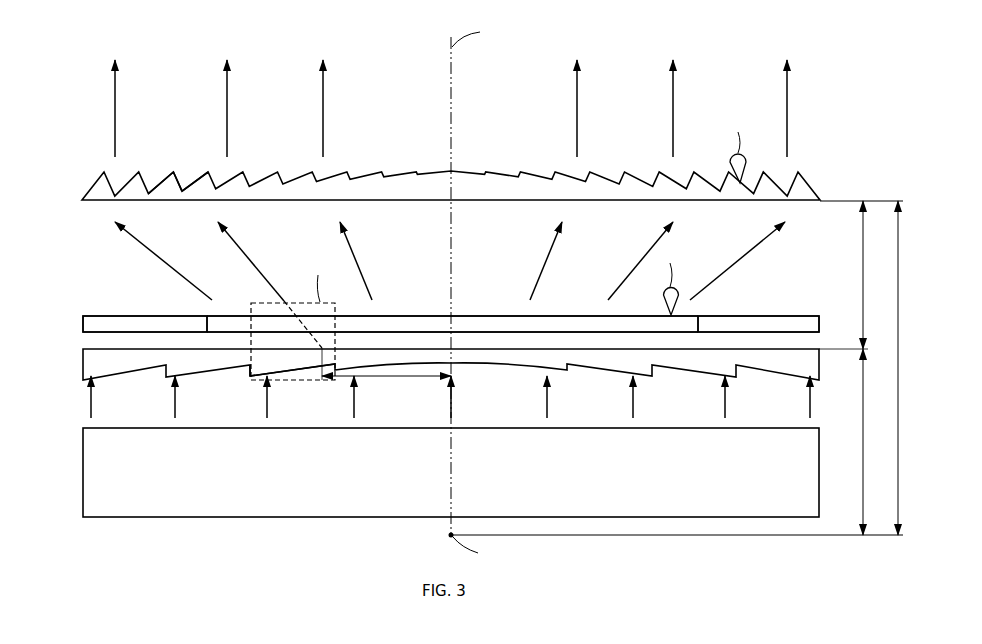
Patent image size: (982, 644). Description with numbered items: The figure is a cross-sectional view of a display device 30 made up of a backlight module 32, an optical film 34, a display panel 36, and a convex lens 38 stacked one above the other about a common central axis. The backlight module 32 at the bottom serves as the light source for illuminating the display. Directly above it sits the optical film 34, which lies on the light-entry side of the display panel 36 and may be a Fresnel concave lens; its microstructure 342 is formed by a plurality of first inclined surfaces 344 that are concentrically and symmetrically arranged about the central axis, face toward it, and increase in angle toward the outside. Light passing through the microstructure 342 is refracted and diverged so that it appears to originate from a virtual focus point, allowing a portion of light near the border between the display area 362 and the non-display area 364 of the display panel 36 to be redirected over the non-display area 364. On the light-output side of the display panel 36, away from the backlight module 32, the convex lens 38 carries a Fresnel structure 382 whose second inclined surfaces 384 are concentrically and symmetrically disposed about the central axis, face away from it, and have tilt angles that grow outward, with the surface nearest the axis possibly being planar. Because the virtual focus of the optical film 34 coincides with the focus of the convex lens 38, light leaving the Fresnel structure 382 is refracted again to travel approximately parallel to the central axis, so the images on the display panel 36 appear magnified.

The display device 30 is at (75, 76).
The backlight module 32 is at (370, 481).
The optical film 34 is at (80, 370).
The microstructure 342 is at (253, 380).
The first inclined surfaces 344 is at (277, 375).
The display panel 36 is at (80, 333).
The display area 362 is at (212, 317).
The non-display area 364 is at (92, 325).
The convex lens 38 is at (97, 182).
The Fresnel structure 382 is at (167, 187).
The second inclined surfaces 384 is at (197, 183).